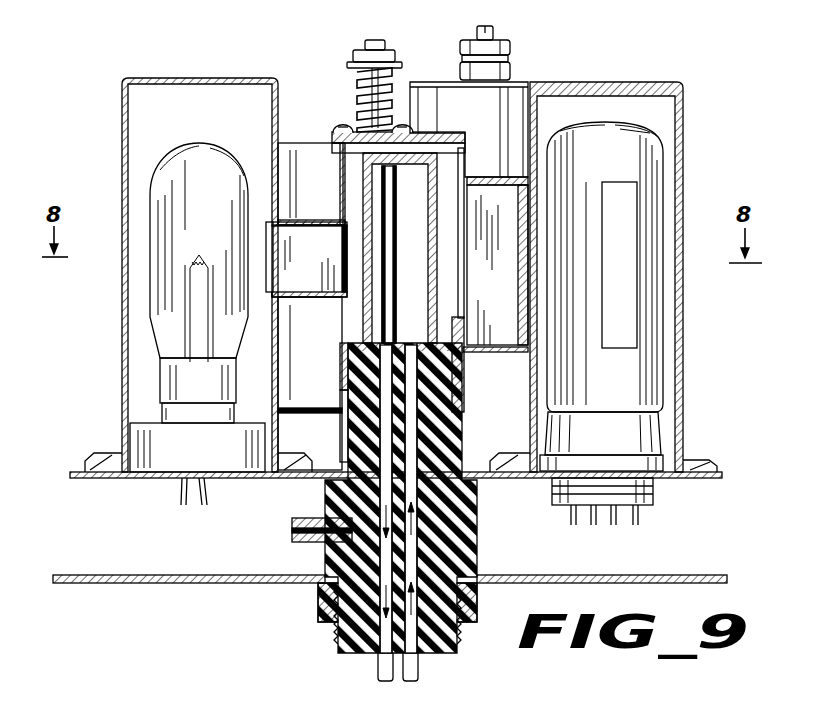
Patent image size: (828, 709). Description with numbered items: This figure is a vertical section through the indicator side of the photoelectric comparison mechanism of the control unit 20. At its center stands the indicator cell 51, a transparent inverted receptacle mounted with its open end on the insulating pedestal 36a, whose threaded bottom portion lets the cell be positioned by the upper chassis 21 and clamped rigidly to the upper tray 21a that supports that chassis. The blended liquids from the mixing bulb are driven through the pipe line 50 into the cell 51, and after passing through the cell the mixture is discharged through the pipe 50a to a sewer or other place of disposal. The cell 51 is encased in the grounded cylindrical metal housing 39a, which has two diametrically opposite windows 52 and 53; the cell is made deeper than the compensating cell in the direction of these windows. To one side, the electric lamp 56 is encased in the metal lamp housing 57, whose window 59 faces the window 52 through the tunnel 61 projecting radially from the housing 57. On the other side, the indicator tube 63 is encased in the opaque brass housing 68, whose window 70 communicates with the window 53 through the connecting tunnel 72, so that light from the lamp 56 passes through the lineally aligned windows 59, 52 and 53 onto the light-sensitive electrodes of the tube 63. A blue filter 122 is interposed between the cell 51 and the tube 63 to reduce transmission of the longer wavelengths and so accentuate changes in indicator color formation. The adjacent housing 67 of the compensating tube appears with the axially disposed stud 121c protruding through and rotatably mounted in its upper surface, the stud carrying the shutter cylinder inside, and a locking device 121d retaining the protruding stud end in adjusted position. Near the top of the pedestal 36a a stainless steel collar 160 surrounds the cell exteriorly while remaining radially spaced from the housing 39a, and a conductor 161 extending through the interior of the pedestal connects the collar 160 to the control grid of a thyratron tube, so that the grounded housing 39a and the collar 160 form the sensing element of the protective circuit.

The control unit 20 is at (715, 575).
The upper chassis 21 is at (80, 472).
The upper tray 21a is at (96, 575).
The pedestal 36a is at (476, 528).
The metal housing 39a is at (342, 170).
The pipe line 50 is at (418, 668).
The discharge pipe 50a is at (378, 662).
The indicator cell 51 is at (437, 266).
The window 52 is at (342, 243).
The window 53 is at (462, 306).
The electric lamp 56 is at (160, 262).
The lamp housing 57 is at (122, 127).
The window 59 is at (272, 248).
The tunnel 61 is at (311, 299).
The indicator tube 63 is at (640, 156).
The tube housing 67 is at (510, 102).
The tube housing 68 is at (680, 326).
The window 70 is at (536, 210).
The tunnel 72 is at (478, 180).
The stud 121c is at (477, 32).
The locking device 121d is at (508, 58).
The blue filter 122 is at (516, 352).
The collar 160 is at (342, 362).
The conductor 161 is at (342, 440).